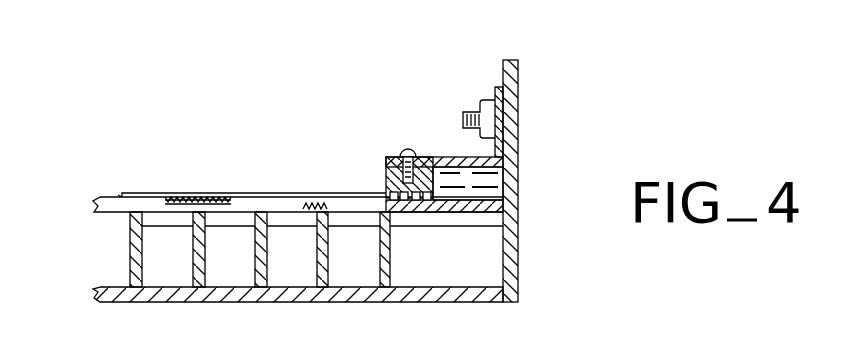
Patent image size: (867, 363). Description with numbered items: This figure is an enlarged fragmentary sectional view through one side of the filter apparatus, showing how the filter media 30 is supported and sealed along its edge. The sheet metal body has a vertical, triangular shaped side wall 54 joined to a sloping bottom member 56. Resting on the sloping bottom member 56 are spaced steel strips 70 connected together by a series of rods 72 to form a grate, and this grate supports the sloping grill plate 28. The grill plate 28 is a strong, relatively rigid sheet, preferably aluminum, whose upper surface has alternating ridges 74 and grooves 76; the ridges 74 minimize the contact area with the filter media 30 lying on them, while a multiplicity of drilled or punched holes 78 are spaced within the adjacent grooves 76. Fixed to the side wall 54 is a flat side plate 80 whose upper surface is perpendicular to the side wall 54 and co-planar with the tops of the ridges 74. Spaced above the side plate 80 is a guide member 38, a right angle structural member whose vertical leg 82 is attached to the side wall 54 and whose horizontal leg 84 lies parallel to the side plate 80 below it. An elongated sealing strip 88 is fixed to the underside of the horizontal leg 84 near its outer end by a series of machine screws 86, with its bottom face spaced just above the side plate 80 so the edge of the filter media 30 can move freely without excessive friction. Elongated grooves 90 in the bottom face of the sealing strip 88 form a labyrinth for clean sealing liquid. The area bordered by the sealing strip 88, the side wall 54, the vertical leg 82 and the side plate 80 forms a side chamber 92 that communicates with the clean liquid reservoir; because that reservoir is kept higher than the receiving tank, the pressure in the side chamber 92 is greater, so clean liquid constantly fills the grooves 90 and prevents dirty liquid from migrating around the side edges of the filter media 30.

The grill plate 28 is at (150, 197).
The filter media 30 is at (130, 197).
The guide member 38 is at (502, 87).
The side wall 54 is at (522, 107).
The sloping bottom member 56 is at (368, 303).
The steel strips 70 is at (388, 248).
The rods 72 is at (302, 228).
The ridges 74 is at (170, 197).
The grooves 76 is at (192, 197).
The holes 78 is at (235, 197).
The side plate 80 is at (490, 214).
The vertical leg 82 is at (493, 100).
The horizontal leg 84 is at (437, 157).
The machine screws 86 is at (407, 150).
The sealing strip 88 is at (387, 160).
The grooves 90 is at (387, 176).
The side chamber 92 is at (467, 183).